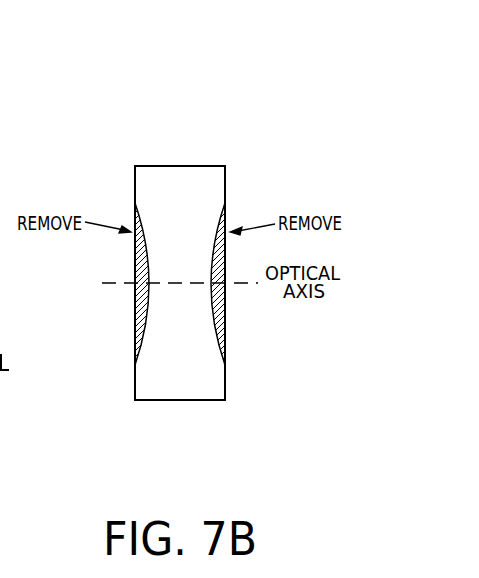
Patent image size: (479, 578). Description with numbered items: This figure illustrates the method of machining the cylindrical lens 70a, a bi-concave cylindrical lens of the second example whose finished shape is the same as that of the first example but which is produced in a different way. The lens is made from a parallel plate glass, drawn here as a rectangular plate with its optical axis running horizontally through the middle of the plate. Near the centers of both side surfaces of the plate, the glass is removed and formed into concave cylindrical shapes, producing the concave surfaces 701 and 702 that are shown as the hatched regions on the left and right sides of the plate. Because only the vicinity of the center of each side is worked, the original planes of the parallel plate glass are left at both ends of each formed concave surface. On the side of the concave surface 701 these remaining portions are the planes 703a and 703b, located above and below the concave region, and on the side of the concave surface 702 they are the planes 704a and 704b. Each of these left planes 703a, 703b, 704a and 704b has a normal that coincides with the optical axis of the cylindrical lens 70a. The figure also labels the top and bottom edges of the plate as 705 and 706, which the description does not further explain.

The cylindrical lens 70a is at (137, 128).
The concave surface 701 is at (135, 310).
The concave surface 702 is at (226, 322).
The plane 703a is at (135, 172).
The plane 703b is at (135, 393).
The plane 704a is at (226, 170).
The plane 704b is at (226, 393).
The upper surface 705 is at (182, 165).
The lower surface 706 is at (183, 400).